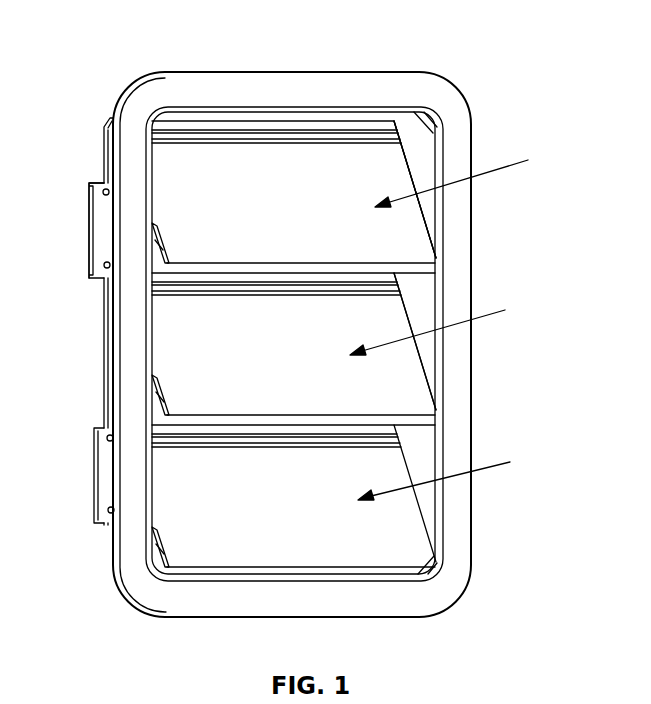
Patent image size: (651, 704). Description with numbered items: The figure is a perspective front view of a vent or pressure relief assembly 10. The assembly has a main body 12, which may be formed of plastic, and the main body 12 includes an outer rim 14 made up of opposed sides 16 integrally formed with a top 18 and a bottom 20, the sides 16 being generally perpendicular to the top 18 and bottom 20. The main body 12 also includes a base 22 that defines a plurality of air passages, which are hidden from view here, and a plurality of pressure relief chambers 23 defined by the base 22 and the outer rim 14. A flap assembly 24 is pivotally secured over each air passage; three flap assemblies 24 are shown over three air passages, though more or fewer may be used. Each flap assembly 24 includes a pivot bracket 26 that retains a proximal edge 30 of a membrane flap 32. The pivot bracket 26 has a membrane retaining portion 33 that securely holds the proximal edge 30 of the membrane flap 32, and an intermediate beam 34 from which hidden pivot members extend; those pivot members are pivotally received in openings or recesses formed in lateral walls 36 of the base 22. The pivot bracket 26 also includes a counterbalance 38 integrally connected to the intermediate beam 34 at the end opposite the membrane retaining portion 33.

The pressure relief assembly 10 is at (524, 86).
The main body 12 is at (445, 72).
The outer rim 14 is at (472, 243).
The opposed sides 16 is at (472, 343).
The top 18 is at (222, 72).
The bottom 20 is at (378, 618).
The base 22 is at (103, 300).
The pressure relief chambers 23 is at (183, 213).
The flap assembly 24 is at (455, 323).
The pivot bracket 26 is at (327, 130).
The proximal edge 30 is at (385, 155).
The membrane flap 32 is at (405, 232).
The membrane retaining portion 33 is at (183, 143).
The intermediate beam 34 is at (252, 137).
The lateral walls 36 is at (88, 193).
The counterbalance 38 is at (373, 118).